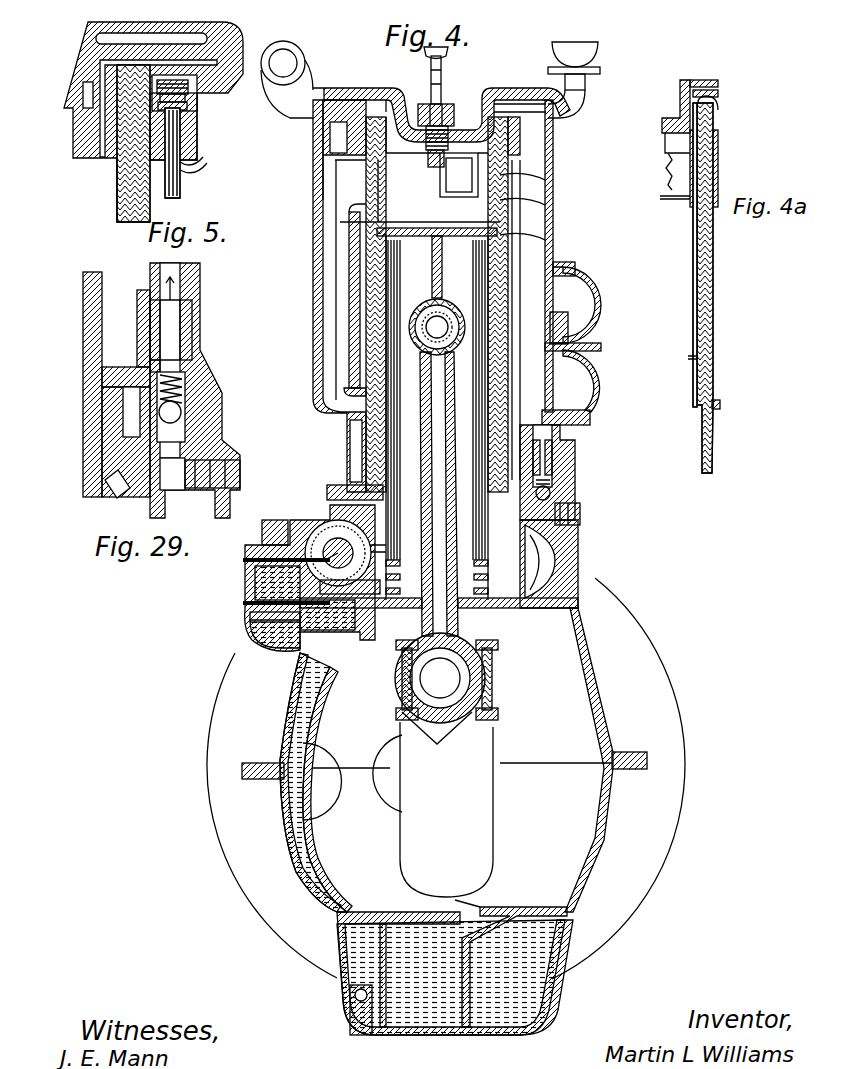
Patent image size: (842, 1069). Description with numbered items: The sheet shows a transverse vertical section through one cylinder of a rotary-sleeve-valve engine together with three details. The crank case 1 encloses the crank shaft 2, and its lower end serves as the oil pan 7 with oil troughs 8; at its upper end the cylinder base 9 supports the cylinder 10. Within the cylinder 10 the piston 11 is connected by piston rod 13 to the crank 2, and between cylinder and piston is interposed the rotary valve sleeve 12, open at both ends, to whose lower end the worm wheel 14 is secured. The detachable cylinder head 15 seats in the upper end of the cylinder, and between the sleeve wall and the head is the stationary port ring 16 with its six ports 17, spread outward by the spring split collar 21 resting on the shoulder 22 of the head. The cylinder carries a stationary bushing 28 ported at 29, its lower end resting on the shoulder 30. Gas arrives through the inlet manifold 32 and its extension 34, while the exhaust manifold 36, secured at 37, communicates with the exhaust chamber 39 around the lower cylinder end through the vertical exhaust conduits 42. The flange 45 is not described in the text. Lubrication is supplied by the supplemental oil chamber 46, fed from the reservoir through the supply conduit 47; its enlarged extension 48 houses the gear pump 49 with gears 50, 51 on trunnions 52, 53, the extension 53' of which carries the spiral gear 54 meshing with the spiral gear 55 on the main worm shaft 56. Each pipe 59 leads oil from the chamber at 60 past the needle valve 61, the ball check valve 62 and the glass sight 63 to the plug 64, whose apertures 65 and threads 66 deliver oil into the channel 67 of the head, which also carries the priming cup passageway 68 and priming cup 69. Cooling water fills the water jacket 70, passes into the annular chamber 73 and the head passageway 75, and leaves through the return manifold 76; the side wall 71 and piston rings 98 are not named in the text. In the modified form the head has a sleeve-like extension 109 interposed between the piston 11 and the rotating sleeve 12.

In FIG. 4, the crank case 1 is at (578, 870).
In FIG. 4, the crank shaft 2 is at (495, 822).
In FIG. 4, the oil pan 7 is at (540, 962).
In FIG. 4, the oil troughs 8 is at (462, 913).
In FIG. 4, the cylinder base 9 is at (570, 500).
In FIG. 29, the cylinder base 9 is at (205, 440).
In FIG. 4, the cylinder 10 is at (556, 246).
In FIG. 5, the cylinder 10 is at (197, 150).
In FIG. 29, the cylinder 10 is at (192, 360).
In FIG. 4A, the cylinder 10 is at (716, 240).
In FIG. 4, the piston 11 is at (594, 281).
In FIG. 4A, the piston 11 is at (697, 277).
In FIG. 4, the rotary valve sleeve 12 is at (355, 305).
In FIG. 5, the rotary valve sleeve 12 is at (133, 203).
In FIG. 29, the rotary valve sleeve 12 is at (100, 292).
In FIG. 4A, the rotary valve sleeve 12 is at (713, 267).
In FIG. 4, the piston rod 13 is at (458, 503).
In FIG. 4, the worm wheel 14 is at (560, 548).
In FIG. 4, the cylinder head 15 is at (368, 126).
In FIG. 4, the port ring 16 is at (425, 122).
In FIG. 5, the port ring 16 is at (128, 160).
In FIG. 4, the ports 17 is at (440, 182).
In FIG. 4, the spring split collar 21 is at (412, 215).
In FIG. 4, the shoulder 22 is at (355, 216).
In FIG. 4, the stationary bushing 28 is at (400, 200).
In FIG. 5, the stationary bushing 28 is at (175, 208).
In FIG. 4, the bushing ports 29 is at (400, 182).
In FIG. 4, the shoulder 30 is at (355, 260).
In FIG. 4, the manifold 32 is at (325, 158).
In FIG. 4, the manifold extension 34 is at (603, 318).
In FIG. 4, the exhaust manifold 36 is at (600, 352).
In FIG. 4, the manifold fastening 37 is at (590, 418).
In FIG. 4, the exhaust chamber 39 is at (603, 386).
In FIG. 4, the exhaust conduits 42 is at (335, 345).
In FIG. 4, the base flange 45 is at (355, 487).
In FIG. 4, the supplemental oil chamber 46 is at (328, 540).
In FIG. 4, the supply conduit 47 is at (345, 790).
In FIG. 4, the enlarged extension 48 is at (255, 586).
In FIG. 4, the gear pump 49 is at (243, 603).
In FIG. 4, the pump gear 50 is at (270, 522).
In FIG. 4, the pump gear 51 is at (250, 640).
In FIG. 4, the trunnion 52 is at (243, 562).
In FIG. 4, the trunnion shaft 53 is at (250, 623).
In FIG. 4, the trunnion extension 53' is at (298, 778).
In FIG. 4, the spiral gear 54 is at (362, 630).
In FIG. 4, the spiral gear 55 is at (386, 560).
In FIG. 4, the main worm shaft 56 is at (340, 553).
In FIG. 5, the pipe 59 is at (200, 164).
In FIG. 29, the pipe 59 is at (170, 268).
In FIG. 29, the pipe inlet 60 is at (152, 470).
In FIG. 4, the needle valve 61 is at (580, 515).
In FIG. 29, the needle valve 61 is at (215, 470).
In FIG. 4, the ball check valve 62 is at (552, 492).
In FIG. 29, the ball check valve 62 is at (188, 405).
In FIG. 4, the glass sight 63 is at (553, 462).
In FIG. 29, the glass sight 63 is at (185, 335).
In FIG. 4, the plug 64 is at (560, 128).
In FIG. 5, the plug 64 is at (187, 108).
In FIG. 4, the apertures 65 is at (580, 108).
In FIG. 5, the apertures 65 is at (184, 102).
In FIG. 5, the plug threads 66 is at (188, 97).
In FIG. 5, the channel 67 is at (105, 104).
In FIG. 5, the priming cup passageway 68 is at (232, 46).
In FIG. 4, the priming cup 69 is at (590, 76).
In FIG. 4, the water jacket 70 is at (352, 322).
In FIG. 4, the crank case side wall 71 is at (560, 590).
In FIG. 4, the annular chamber 73 is at (338, 128).
In FIG. 4, the head passageway 75 is at (335, 92).
In FIG. 4, the return manifold 76 is at (287, 73).
In FIG. 4, the piston rings 98 is at (437, 418).
In FIG. 4A, the sleeve-like extension 109 is at (712, 406).